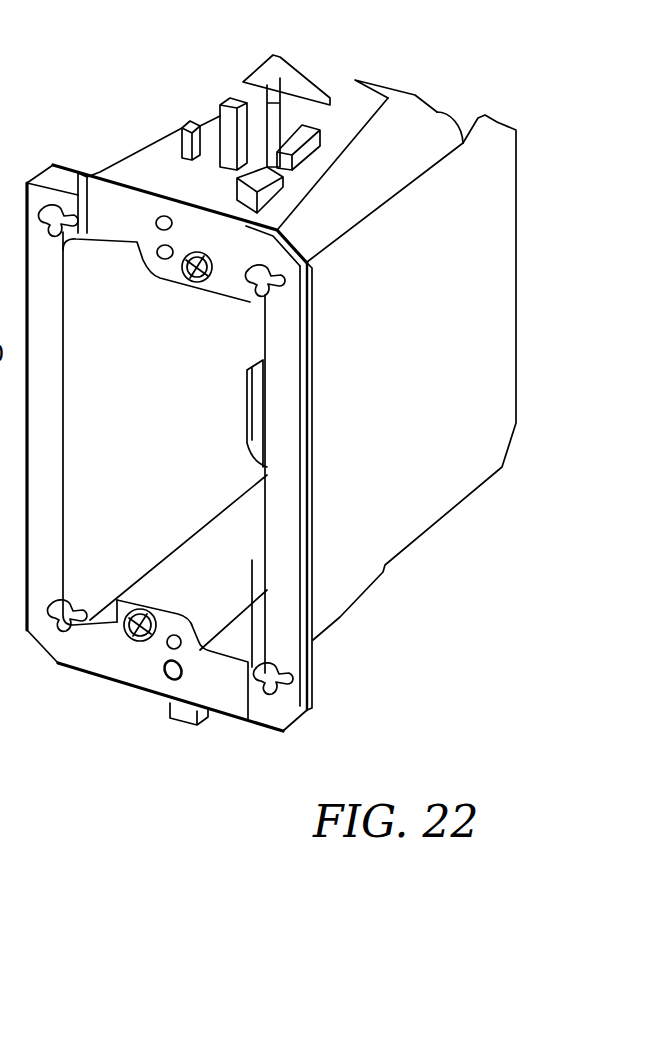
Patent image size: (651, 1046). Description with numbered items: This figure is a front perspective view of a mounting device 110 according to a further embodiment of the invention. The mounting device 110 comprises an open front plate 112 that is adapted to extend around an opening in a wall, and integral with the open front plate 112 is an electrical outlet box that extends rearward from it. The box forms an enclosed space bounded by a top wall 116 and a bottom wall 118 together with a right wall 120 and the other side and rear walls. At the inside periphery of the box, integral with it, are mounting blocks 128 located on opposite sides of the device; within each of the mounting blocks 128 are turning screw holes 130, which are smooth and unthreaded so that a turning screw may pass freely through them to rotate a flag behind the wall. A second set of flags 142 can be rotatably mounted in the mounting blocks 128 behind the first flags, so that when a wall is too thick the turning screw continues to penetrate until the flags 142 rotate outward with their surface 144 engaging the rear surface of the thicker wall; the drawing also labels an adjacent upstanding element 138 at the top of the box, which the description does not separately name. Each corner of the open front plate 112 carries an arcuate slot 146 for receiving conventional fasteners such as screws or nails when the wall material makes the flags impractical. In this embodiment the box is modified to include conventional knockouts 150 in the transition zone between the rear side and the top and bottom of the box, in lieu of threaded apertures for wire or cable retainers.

The mounting device 110 is at (548, 345).
The open front plate 112 is at (290, 605).
The top wall 116 is at (220, 189).
The bottom wall 118 is at (265, 655).
The right wall 120 is at (487, 362).
The mounting blocks 128 is at (153, 260).
The turning screw holes 130 is at (198, 283).
The tab 138 is at (230, 120).
The flags 142 is at (280, 137).
The surface 144 is at (190, 145).
The slots 146 is at (282, 278).
The knockouts 150 is at (263, 432).